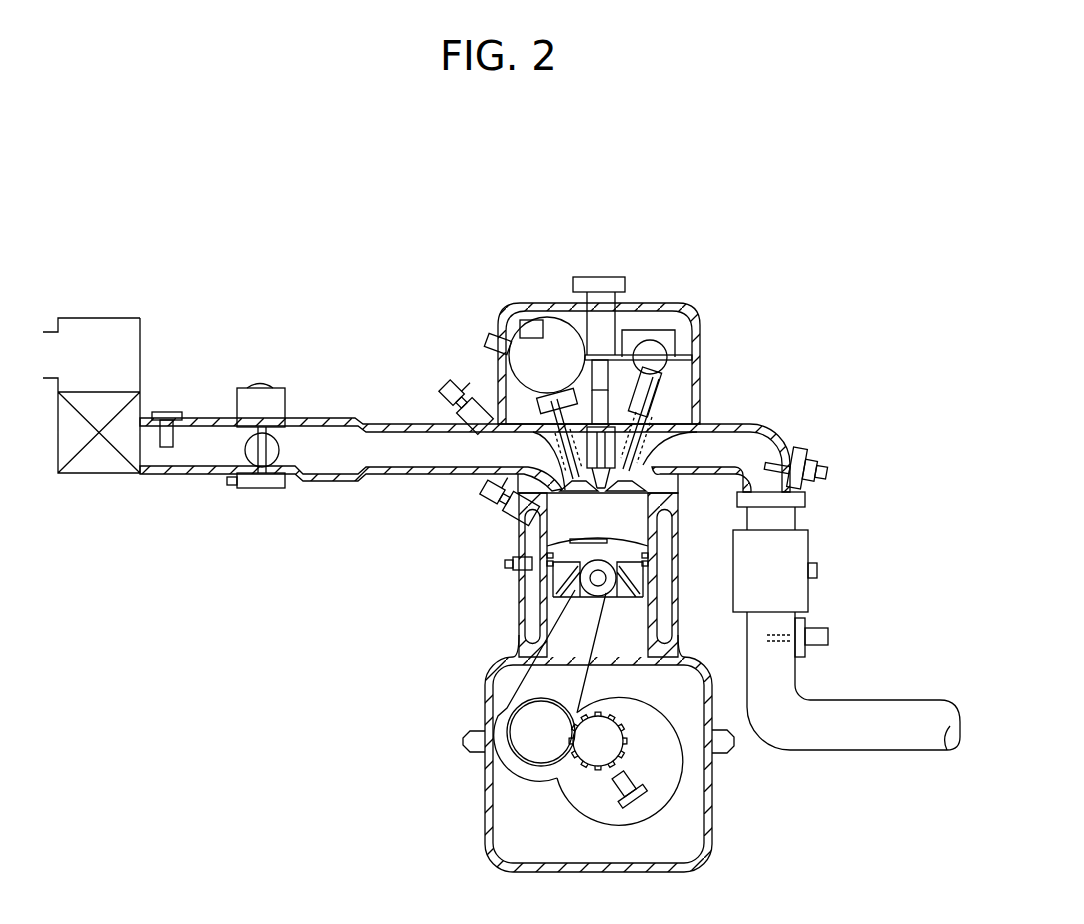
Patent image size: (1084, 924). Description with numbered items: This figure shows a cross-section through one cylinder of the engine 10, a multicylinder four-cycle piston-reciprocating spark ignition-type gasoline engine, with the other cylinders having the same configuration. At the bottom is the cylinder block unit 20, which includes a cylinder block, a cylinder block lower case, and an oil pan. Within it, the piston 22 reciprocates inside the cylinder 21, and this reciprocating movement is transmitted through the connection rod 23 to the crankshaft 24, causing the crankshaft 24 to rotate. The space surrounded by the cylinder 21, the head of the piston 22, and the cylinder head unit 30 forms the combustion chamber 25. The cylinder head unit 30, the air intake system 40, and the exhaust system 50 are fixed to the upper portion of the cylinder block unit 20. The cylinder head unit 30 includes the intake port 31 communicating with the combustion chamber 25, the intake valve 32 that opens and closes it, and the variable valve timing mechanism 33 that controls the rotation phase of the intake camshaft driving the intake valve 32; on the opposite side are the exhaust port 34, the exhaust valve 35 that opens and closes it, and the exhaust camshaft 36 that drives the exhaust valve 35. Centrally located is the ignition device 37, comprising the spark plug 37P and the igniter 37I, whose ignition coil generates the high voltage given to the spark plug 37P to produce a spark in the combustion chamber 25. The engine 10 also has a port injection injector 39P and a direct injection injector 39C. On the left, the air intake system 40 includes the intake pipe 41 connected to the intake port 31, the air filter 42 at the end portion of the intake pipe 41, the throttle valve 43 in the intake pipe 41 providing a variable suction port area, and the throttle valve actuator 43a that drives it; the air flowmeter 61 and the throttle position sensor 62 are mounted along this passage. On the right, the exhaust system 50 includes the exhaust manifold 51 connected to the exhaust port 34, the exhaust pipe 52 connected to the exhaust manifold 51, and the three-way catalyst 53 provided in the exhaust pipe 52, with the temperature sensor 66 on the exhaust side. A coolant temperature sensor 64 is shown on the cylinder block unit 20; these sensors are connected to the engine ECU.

The engine 10 is at (758, 223).
The cylinder block unit 20 is at (498, 640).
The cylinder 21 is at (583, 550).
The piston 22 is at (520, 598).
The connection rod 23 is at (605, 637).
The crankshaft 24 is at (660, 667).
The combustion chamber 25 is at (617, 531).
The cylinder head unit 30 is at (733, 302).
The intake port 31 is at (547, 460).
The intake valve 32 is at (537, 470).
The variable valve timing mechanism 33 is at (545, 333).
The exhaust port 34 is at (645, 462).
The exhaust valve 35 is at (660, 498).
The exhaust camshaft 36 is at (651, 340).
The ignition device 37 is at (610, 207).
The igniter 37I is at (606, 288).
The spark plug 37P is at (662, 403).
The port injection injector 39P is at (488, 420).
The direct injection injector 39C is at (508, 510).
The air intake system 40 is at (346, 368).
The intake pipe 41 is at (385, 480).
The air filter 42 is at (85, 478).
The throttle valve 43 is at (237, 450).
The throttle valve actuator 43a is at (245, 386).
The exhaust system 50 is at (819, 384).
The exhaust manifold 51 is at (773, 437).
The exhaust pipe 52 is at (770, 744).
The three-way catalyst 53 is at (810, 555).
The air flowmeter 61 is at (176, 412).
The throttle position sensor 62 is at (262, 488).
The coolant temperature sensor 64 is at (513, 567).
The temperature sensor 66 is at (818, 572).